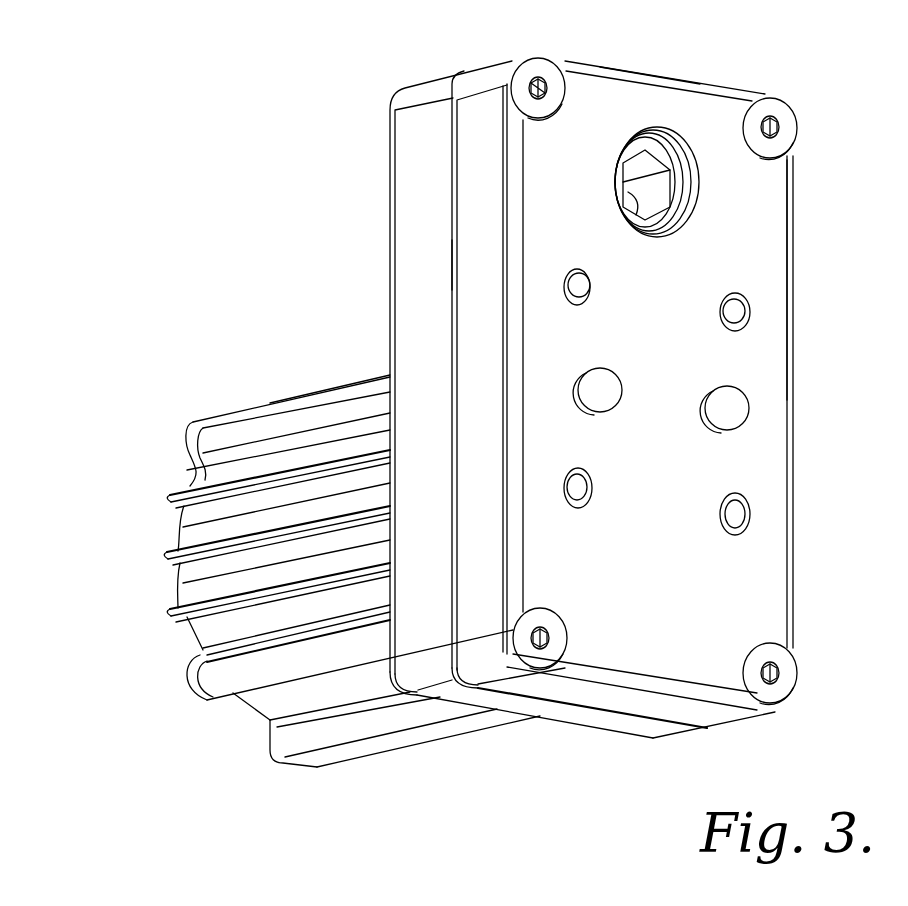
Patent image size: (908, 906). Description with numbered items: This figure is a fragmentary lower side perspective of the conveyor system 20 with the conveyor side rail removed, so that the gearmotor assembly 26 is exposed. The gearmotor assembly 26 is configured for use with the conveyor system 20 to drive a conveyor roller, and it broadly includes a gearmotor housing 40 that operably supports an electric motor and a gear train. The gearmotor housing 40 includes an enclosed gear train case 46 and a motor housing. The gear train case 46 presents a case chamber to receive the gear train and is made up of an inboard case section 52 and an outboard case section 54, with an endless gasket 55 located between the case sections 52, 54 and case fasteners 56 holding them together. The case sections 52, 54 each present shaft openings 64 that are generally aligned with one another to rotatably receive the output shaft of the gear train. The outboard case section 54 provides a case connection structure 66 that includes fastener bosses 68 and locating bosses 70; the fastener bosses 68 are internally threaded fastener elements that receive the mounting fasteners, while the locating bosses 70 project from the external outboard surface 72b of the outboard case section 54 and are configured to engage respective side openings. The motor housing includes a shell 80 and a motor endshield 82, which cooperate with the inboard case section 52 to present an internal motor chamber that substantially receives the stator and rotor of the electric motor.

The conveyor system 20 is at (138, 126).
The gearmotor assembly 26 is at (793, 582).
The gearmotor housing 40 is at (780, 246).
The gear train case 46 is at (660, 92).
The inboard case section 52 is at (408, 94).
The outboard case section 54 is at (487, 72).
The endless gasket 55 is at (455, 262).
The case fasteners 56 is at (540, 63).
The shaft openings 64 is at (628, 192).
The case connection structure 66 is at (740, 318).
The fastener bosses 68 is at (580, 287).
The locating bosses 70 is at (730, 400).
The external outboard surface 72b is at (756, 202).
The shell 80 is at (240, 668).
The motor endshield 82 is at (178, 598).